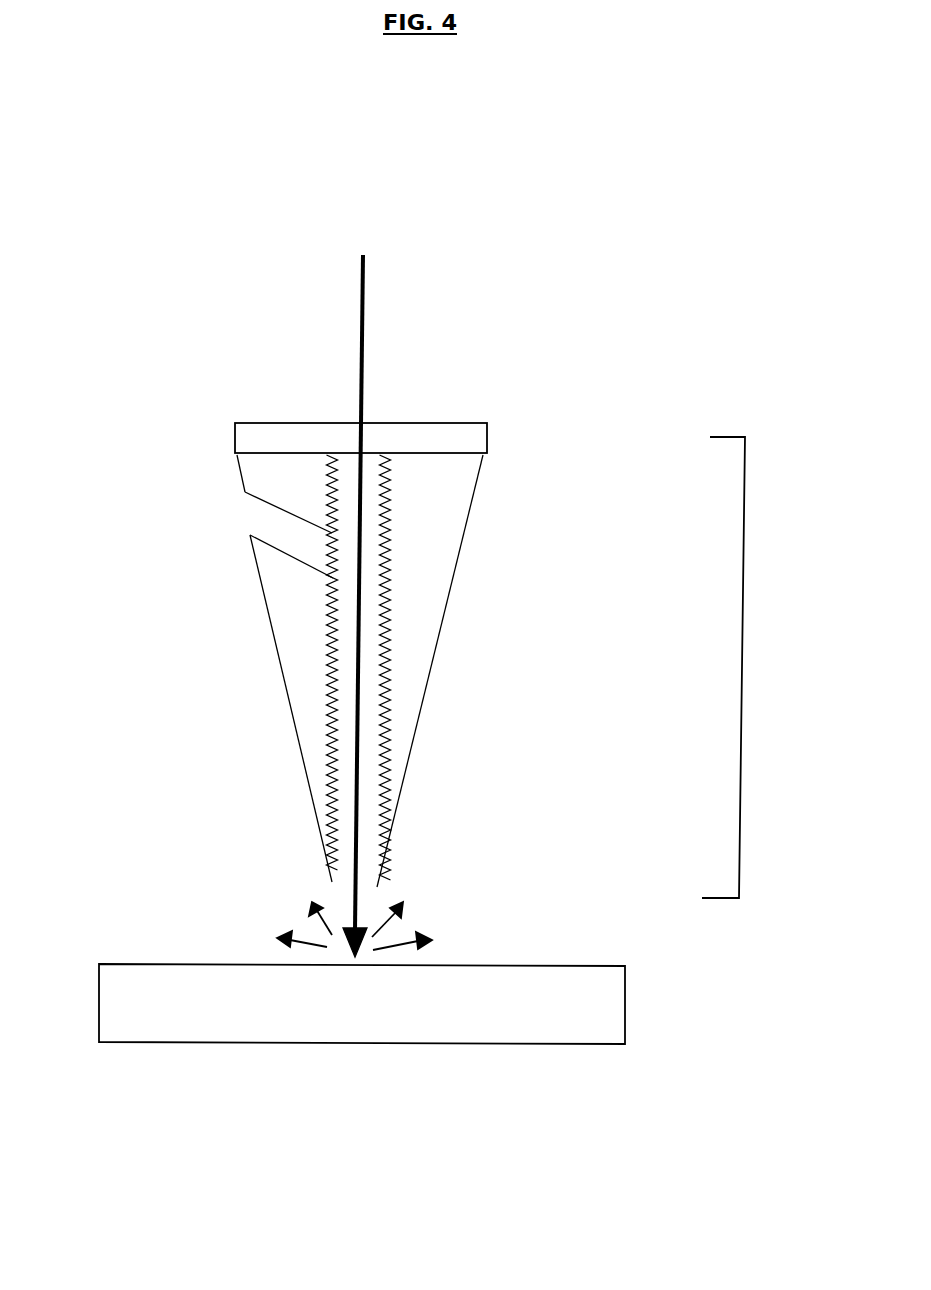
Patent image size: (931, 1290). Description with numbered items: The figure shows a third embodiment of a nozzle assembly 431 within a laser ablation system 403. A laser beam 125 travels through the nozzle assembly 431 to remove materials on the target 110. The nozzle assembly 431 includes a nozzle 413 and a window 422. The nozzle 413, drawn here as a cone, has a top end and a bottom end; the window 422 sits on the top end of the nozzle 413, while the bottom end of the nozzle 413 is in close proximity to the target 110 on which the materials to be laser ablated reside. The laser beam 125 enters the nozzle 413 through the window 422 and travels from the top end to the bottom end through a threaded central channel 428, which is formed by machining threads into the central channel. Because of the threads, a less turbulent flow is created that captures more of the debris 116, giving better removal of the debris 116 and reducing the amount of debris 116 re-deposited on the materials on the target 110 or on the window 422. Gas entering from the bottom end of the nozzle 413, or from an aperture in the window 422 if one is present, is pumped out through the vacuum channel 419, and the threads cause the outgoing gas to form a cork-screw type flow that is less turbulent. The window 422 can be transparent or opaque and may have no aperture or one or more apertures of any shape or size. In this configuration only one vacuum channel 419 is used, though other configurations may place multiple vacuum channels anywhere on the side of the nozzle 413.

The laser ablation system 403 is at (388, 1219).
The laser beam 125 is at (346, 241).
The nozzle assembly 431 is at (795, 674).
The window 422 is at (223, 437).
The nozzle 413 is at (588, 557).
The vacuum channel 419 is at (250, 515).
The threaded central channel 428 is at (367, 667).
The debris 116 is at (468, 920).
The target 110 is at (346, 1029).